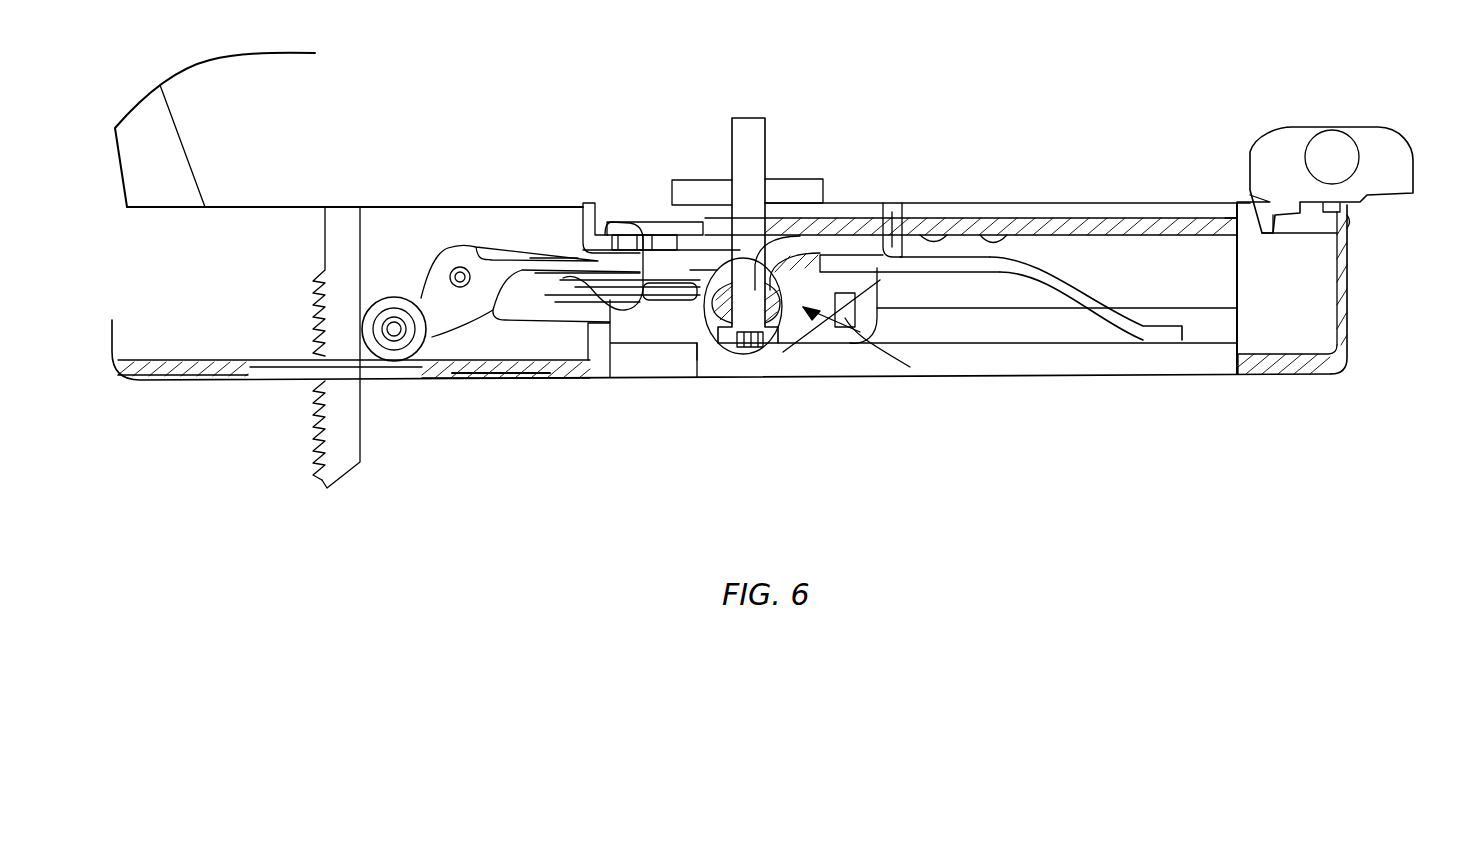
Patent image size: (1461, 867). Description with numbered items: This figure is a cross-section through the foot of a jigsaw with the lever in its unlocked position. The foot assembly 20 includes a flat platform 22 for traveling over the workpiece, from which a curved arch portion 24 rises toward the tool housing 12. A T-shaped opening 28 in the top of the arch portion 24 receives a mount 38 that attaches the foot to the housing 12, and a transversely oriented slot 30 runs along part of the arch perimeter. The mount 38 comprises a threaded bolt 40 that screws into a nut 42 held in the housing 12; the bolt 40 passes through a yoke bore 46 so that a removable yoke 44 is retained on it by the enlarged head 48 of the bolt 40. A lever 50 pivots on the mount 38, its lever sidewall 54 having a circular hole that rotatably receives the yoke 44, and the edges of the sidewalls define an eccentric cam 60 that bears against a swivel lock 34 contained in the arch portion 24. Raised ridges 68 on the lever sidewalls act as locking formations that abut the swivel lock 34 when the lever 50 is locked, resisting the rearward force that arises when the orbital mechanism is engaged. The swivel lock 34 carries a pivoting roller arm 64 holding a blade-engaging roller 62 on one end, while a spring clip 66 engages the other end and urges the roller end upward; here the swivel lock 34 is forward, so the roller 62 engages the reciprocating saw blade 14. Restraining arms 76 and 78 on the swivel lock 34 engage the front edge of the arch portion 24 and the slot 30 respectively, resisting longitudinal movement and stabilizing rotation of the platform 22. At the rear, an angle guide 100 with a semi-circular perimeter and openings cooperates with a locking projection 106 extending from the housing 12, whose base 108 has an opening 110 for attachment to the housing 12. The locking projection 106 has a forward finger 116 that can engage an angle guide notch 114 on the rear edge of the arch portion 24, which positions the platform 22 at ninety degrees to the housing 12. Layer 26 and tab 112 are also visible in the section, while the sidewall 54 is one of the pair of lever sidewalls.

The housing 12 is at (1135, 203).
The saw blade 14 is at (345, 462).
The foot assembly 20 is at (1330, 409).
The platform 22 is at (1258, 377).
The arch portion 24 is at (1088, 267).
The layer 26 is at (1010, 232).
The T-shaped opening 28 is at (697, 225).
The slot 30 is at (962, 232).
The swivel lock 34 is at (643, 225).
The mount 38 is at (847, 327).
The threaded bolt 40 is at (750, 140).
The nut 42 is at (795, 193).
The yoke 44 is at (700, 345).
The yoke bore 46 is at (800, 238).
The enlarged head 48 is at (770, 343).
The lever 50 is at (1097, 315).
The lever sidewall 54 is at (860, 332).
The eccentric cam 60 is at (660, 245).
The blade-engaging roller 62 is at (393, 360).
The pivoting roller arm 64 is at (440, 297).
The spring clip 66 is at (600, 310).
The raised ridges 68 is at (880, 353).
The restraining arm 76 is at (583, 218).
The restraining arm 78 is at (892, 218).
The angle guide 100 is at (1347, 313).
The locking projection 106 is at (1305, 235).
The base 108 is at (1377, 145).
The opening 110 is at (1325, 140).
The tab 112 is at (1350, 214).
The angle guide notch 114 is at (1223, 227).
The forward finger 116 is at (1262, 233).